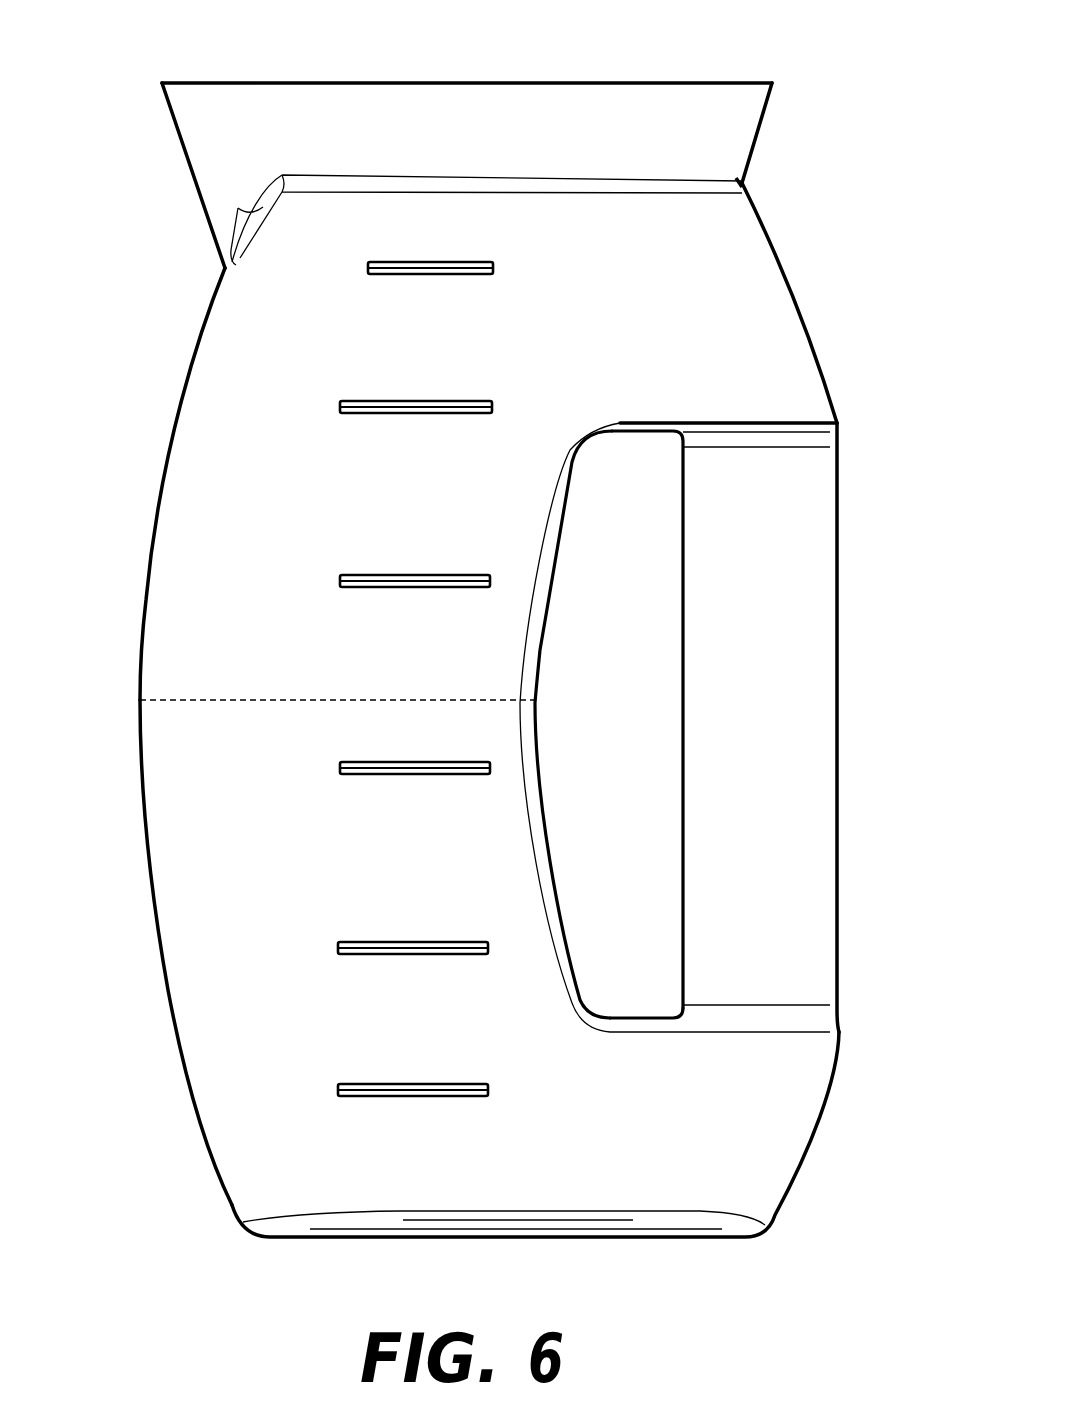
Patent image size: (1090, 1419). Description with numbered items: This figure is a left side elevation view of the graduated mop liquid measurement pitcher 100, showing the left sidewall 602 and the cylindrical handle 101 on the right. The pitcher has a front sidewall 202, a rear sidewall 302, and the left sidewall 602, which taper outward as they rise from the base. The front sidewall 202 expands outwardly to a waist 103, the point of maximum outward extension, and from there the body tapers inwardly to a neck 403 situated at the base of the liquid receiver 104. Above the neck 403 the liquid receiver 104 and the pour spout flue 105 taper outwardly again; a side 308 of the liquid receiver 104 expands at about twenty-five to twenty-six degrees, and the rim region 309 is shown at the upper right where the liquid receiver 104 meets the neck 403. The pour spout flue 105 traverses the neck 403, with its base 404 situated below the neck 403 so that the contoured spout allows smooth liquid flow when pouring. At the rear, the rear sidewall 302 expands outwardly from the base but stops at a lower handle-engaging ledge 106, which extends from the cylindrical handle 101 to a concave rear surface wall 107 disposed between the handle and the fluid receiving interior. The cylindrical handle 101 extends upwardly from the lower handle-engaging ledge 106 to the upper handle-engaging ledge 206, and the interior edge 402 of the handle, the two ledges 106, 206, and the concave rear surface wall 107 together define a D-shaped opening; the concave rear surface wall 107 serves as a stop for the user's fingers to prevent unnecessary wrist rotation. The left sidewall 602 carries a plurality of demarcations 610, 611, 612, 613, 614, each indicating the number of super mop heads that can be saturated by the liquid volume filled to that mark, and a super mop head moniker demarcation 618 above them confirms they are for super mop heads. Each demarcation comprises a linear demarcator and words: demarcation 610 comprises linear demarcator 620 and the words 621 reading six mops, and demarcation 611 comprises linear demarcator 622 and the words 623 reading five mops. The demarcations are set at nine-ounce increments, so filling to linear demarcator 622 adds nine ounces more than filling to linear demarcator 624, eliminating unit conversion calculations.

The graduated mop liquid measurement pitcher 100 is at (915, 340).
The cylindrical handle 101 is at (745, 713).
The waist 103 is at (175, 700).
The liquid receiver 104 is at (660, 66).
The pour spout flue 105 is at (207, 68).
The lower handle-engaging ledge 106 is at (643, 1007).
The concave rear surface wall 107 is at (538, 742).
The front sidewall 202 is at (170, 397).
The upper handle-engaging ledge 206 is at (645, 432).
The rear sidewall 302 is at (800, 298).
The side of the liquid receiver 308 is at (505, 130).
The rim lip 309 is at (766, 120).
The interior edge of the cylindrical handle 402 is at (683, 608).
The neck 403 is at (762, 185).
The base of the pour spout flue 404 is at (200, 265).
The left sidewall 602 is at (140, 855).
The demarcation 610 is at (270, 228).
The demarcation 611 is at (235, 372).
The demarcation 612 is at (218, 578).
The demarcation 613 is at (218, 768).
The demarcation 614 is at (218, 947).
The super mop head moniker demarcation 618 is at (628, 318).
The linear demarcator 620 is at (427, 262).
The words 621 is at (302, 255).
The linear demarcator 622 is at (397, 402).
The words 623 is at (280, 392).
The linear demarcator 624 is at (405, 578).